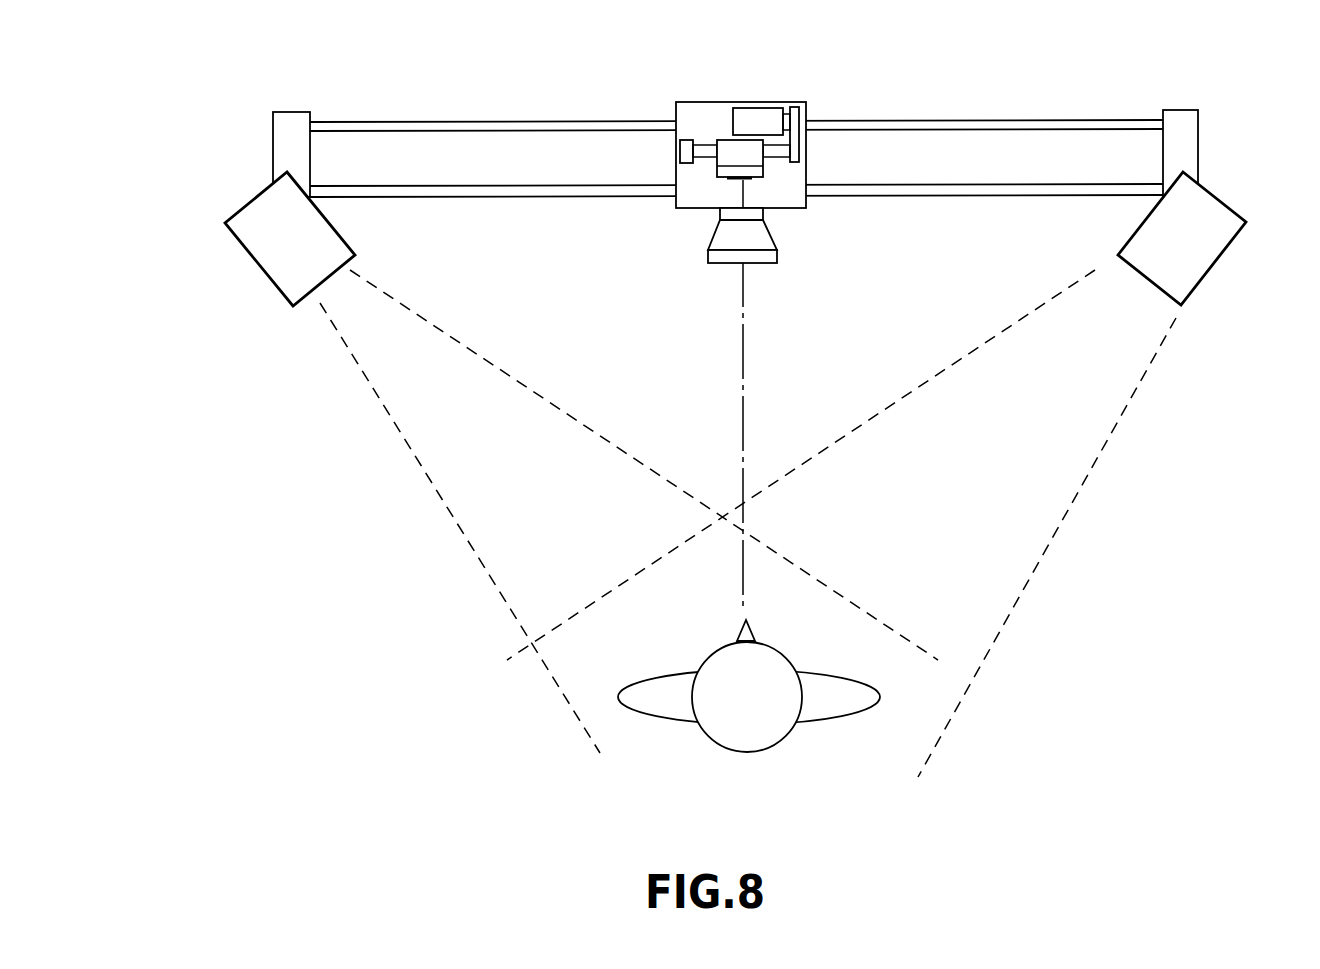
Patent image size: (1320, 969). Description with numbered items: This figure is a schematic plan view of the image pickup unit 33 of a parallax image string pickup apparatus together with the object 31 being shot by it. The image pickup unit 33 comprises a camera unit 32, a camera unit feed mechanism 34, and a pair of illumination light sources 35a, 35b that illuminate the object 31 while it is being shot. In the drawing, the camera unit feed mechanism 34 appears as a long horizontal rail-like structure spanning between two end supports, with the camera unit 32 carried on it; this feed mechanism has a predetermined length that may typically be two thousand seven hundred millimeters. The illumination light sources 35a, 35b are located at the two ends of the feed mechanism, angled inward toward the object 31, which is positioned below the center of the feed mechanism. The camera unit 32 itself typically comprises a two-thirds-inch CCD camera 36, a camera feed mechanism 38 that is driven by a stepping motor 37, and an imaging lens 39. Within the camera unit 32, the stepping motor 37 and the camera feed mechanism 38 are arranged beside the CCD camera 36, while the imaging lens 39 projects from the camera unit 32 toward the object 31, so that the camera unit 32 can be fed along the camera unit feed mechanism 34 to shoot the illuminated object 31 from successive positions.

The object 31 is at (770, 732).
The camera unit 32 is at (815, 109).
The image pickup unit 33 is at (172, 119).
The camera unit feed mechanism 34 is at (977, 121).
The illumination light source 35a is at (253, 246).
The illumination light source 35b is at (1210, 250).
The CCD camera 36 is at (727, 150).
The stepping motor 37 is at (754, 120).
The camera feed mechanism 38 is at (680, 148).
The imaging lens 39 is at (778, 256).